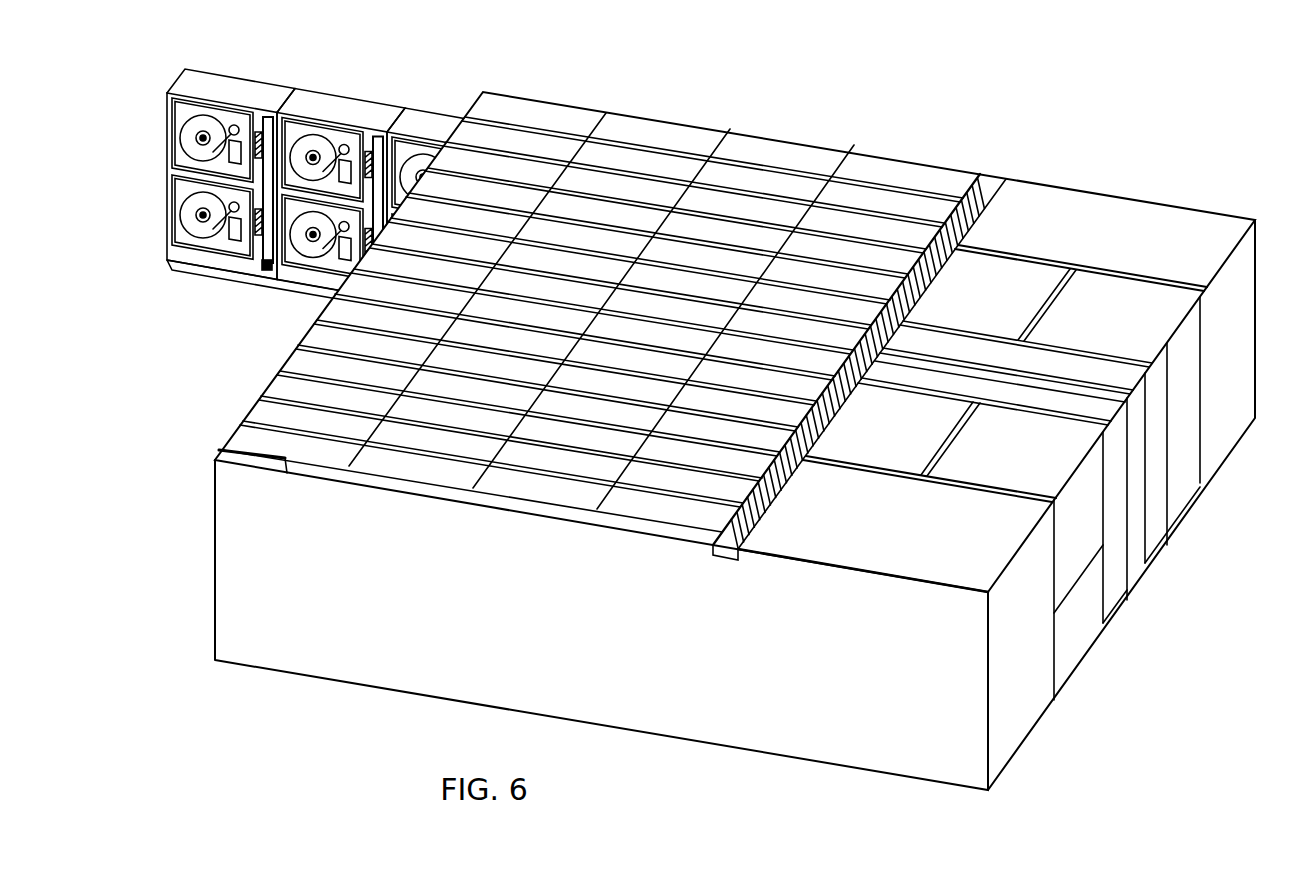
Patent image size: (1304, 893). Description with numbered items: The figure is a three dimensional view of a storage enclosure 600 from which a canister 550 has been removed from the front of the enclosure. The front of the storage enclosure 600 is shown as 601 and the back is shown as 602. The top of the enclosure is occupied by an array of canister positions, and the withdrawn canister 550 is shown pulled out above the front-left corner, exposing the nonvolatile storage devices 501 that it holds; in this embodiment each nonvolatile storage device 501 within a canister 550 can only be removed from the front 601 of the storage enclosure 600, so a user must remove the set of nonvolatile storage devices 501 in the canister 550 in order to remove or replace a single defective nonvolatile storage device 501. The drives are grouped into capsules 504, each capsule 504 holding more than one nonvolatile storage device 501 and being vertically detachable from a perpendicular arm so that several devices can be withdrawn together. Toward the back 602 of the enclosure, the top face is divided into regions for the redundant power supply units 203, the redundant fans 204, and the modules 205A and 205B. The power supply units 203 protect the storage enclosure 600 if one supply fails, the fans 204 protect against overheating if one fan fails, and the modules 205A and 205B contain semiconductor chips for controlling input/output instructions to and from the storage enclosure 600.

The storage enclosure 600 is at (690, 409).
The front of storage enclosure 601 is at (309, 235).
The back of storage enclosure 602 is at (1033, 786).
The nonvolatile storage device 501 is at (232, 101).
The capsule 504 is at (292, 92).
The canister 550 is at (398, 103).
The power supply units 203 is at (1147, 274).
The fans 204 is at (1103, 354).
The module 205A is at (1030, 407).
The module 205B is at (1040, 381).